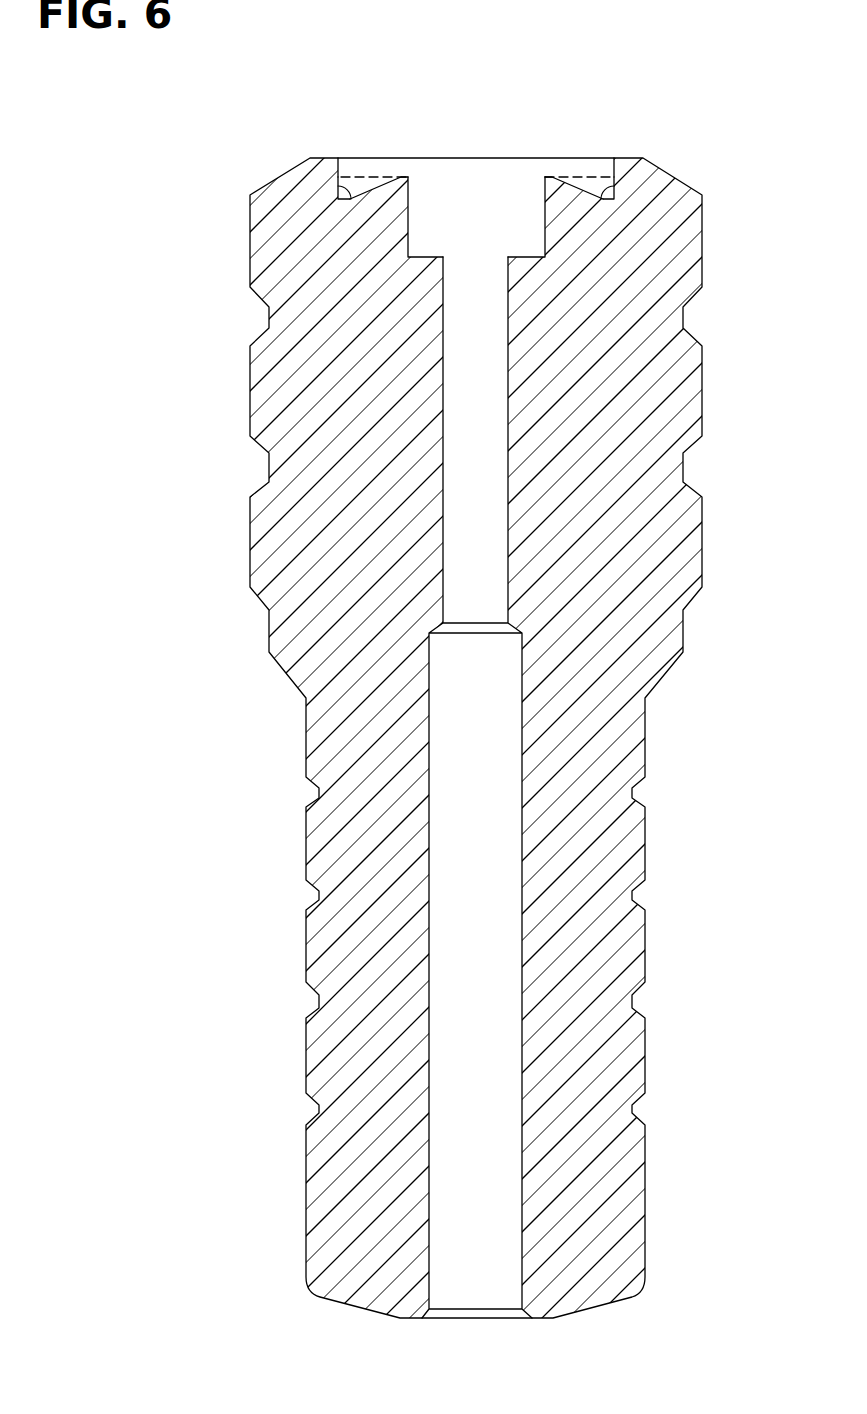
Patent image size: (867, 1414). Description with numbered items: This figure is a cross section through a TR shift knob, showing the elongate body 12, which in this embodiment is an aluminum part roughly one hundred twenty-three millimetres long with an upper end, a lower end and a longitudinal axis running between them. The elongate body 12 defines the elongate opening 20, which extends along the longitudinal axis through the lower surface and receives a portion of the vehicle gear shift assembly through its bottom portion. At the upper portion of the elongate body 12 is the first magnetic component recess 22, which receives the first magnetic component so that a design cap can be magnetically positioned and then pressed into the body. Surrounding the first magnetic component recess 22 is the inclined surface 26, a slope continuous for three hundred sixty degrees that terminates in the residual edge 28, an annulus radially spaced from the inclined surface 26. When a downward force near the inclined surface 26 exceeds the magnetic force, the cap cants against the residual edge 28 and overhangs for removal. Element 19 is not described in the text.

The elongate body 12 is at (622, 668).
The cover plate 19 is at (515, 172).
The elongate opening 20 is at (493, 943).
The first magnetic component recess 22 is at (526, 258).
The inclined surface 26 is at (388, 182).
The residual edge 28 is at (342, 198).